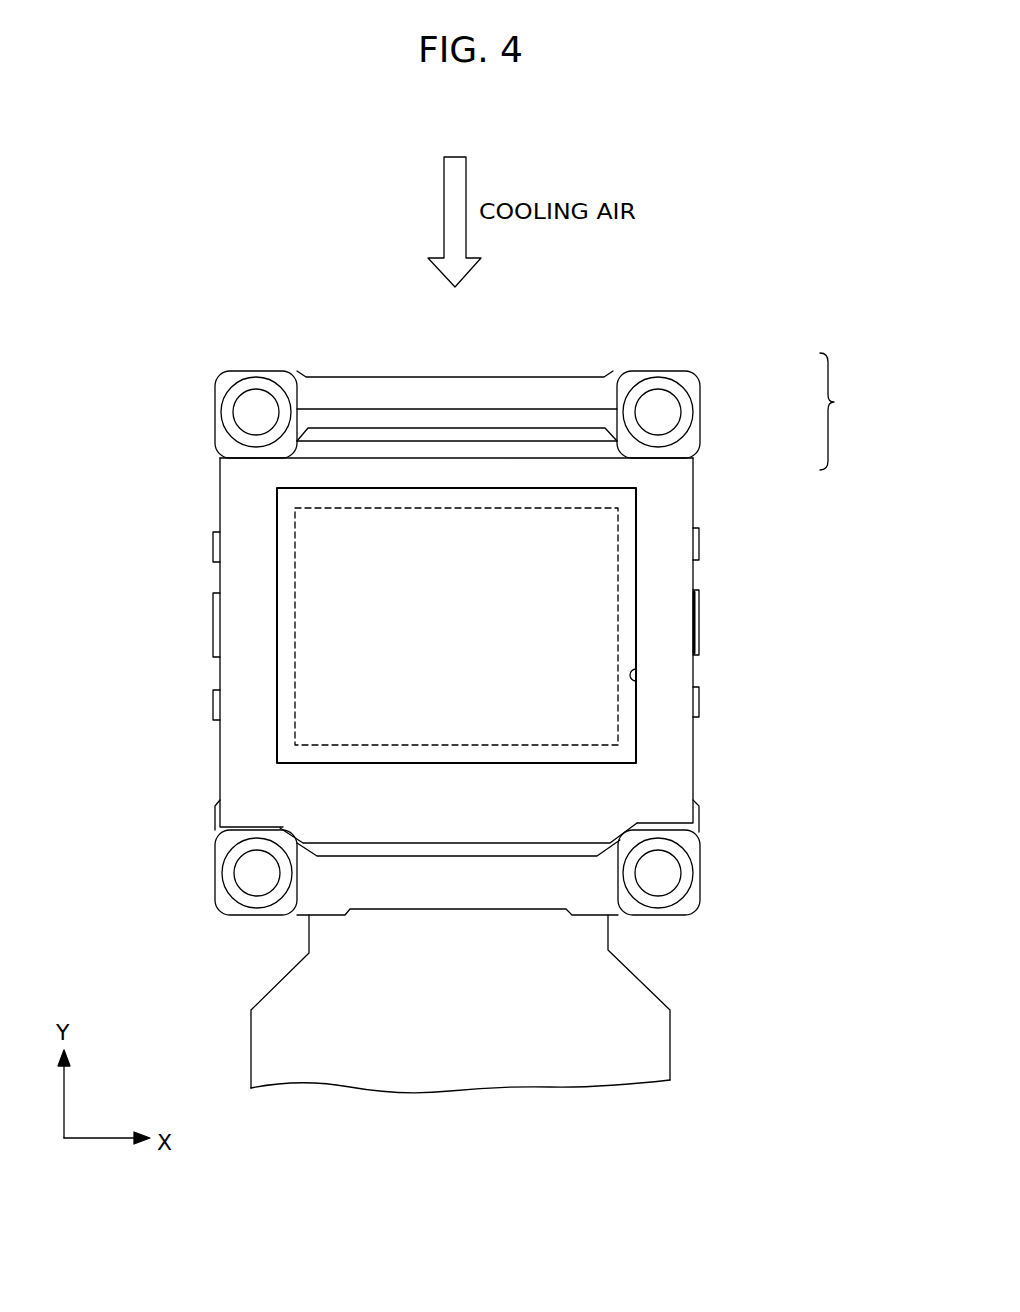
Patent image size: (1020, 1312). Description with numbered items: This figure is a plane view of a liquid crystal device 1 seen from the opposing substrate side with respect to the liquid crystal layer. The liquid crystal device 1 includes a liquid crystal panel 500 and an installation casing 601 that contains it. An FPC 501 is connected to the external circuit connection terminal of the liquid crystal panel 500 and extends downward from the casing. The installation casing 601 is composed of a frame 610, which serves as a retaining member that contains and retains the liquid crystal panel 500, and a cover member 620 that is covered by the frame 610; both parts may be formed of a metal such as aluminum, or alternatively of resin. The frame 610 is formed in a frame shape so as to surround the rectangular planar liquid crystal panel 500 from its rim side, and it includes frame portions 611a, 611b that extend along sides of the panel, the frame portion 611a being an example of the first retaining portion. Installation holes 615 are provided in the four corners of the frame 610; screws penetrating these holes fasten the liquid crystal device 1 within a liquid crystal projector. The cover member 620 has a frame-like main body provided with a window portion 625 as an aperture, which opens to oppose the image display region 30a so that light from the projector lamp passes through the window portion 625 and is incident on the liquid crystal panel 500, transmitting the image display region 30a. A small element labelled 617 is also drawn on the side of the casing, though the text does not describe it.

The liquid crystal device 1 is at (688, 234).
The image display region 30a is at (355, 593).
The liquid crystal panel 500 is at (473, 625).
The FPC 501 is at (648, 1043).
The installation casing 601 is at (851, 411).
The frame 610 is at (479, 642).
The frame portion 611a is at (536, 385).
The frame portion 611b is at (600, 888).
The installation holes 615 is at (248, 412).
The engaging portion 617 is at (697, 622).
The cover member 620 is at (692, 476).
The window portion 625 is at (638, 664).